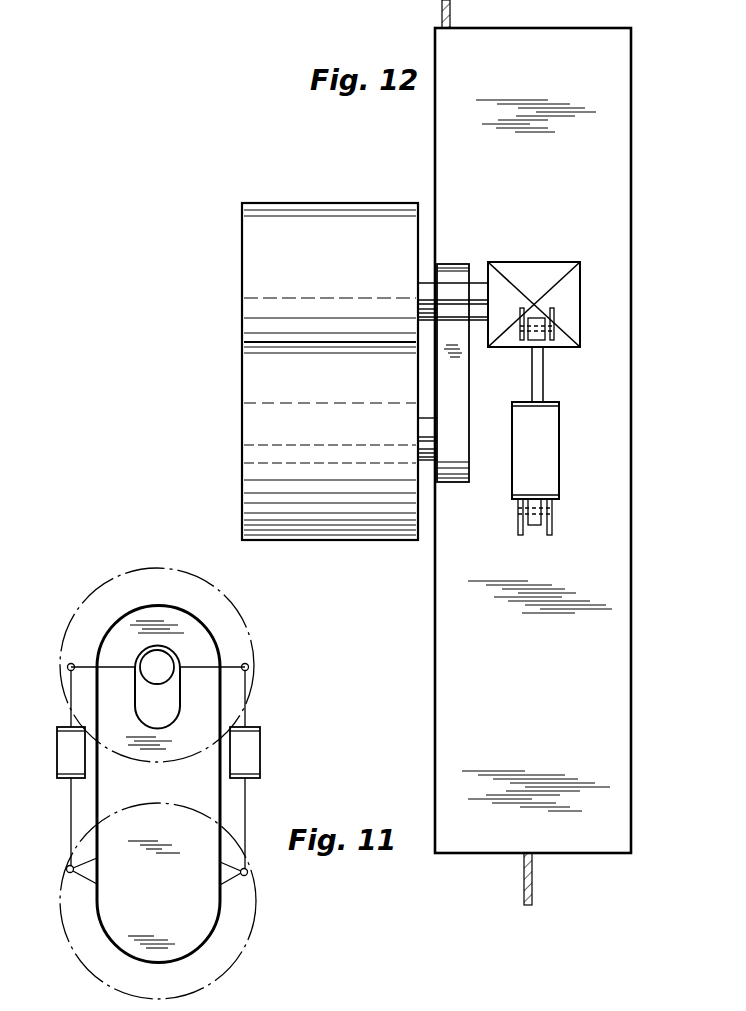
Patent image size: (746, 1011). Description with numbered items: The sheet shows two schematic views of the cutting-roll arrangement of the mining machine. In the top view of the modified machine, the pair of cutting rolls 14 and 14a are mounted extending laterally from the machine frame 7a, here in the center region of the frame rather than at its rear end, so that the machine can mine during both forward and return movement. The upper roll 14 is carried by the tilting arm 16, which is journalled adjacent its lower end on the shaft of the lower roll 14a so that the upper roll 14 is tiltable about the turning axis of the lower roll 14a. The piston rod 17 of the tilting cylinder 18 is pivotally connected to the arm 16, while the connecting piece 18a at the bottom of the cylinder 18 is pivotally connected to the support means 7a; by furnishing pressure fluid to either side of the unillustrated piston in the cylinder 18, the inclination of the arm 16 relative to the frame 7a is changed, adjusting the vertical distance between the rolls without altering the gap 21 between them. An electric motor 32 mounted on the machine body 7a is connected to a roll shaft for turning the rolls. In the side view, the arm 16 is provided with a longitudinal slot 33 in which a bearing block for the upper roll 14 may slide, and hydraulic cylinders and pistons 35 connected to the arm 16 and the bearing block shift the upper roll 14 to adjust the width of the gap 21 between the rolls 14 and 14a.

In FIG. 12, the machine frame 7a is at (610, 708).
In FIG. 12, the upper cutting roll 14 is at (251, 266).
In FIG. 11, the upper cutting roll 14 is at (240, 633).
In FIG. 12, the lower cutting roll 14a is at (252, 498).
In FIG. 11, the lower cutting roll 14a is at (226, 957).
In FIG. 12, the tilting arm 16 is at (453, 373).
In FIG. 11, the tilting arm 16 is at (103, 808).
In FIG. 12, the piston rod 17 is at (540, 378).
In FIG. 12, the tilting cylinder 18 is at (555, 428).
In FIG. 12, the connecting piece 18a is at (534, 535).
In FIG. 11, the gap 21 is at (163, 787).
In FIG. 12, the electric motor 32 is at (568, 295).
In FIG. 11, the longitudinal slot 33 is at (168, 714).
In FIG. 11, the hydraulic cylinders and pistons 35 is at (70, 750).